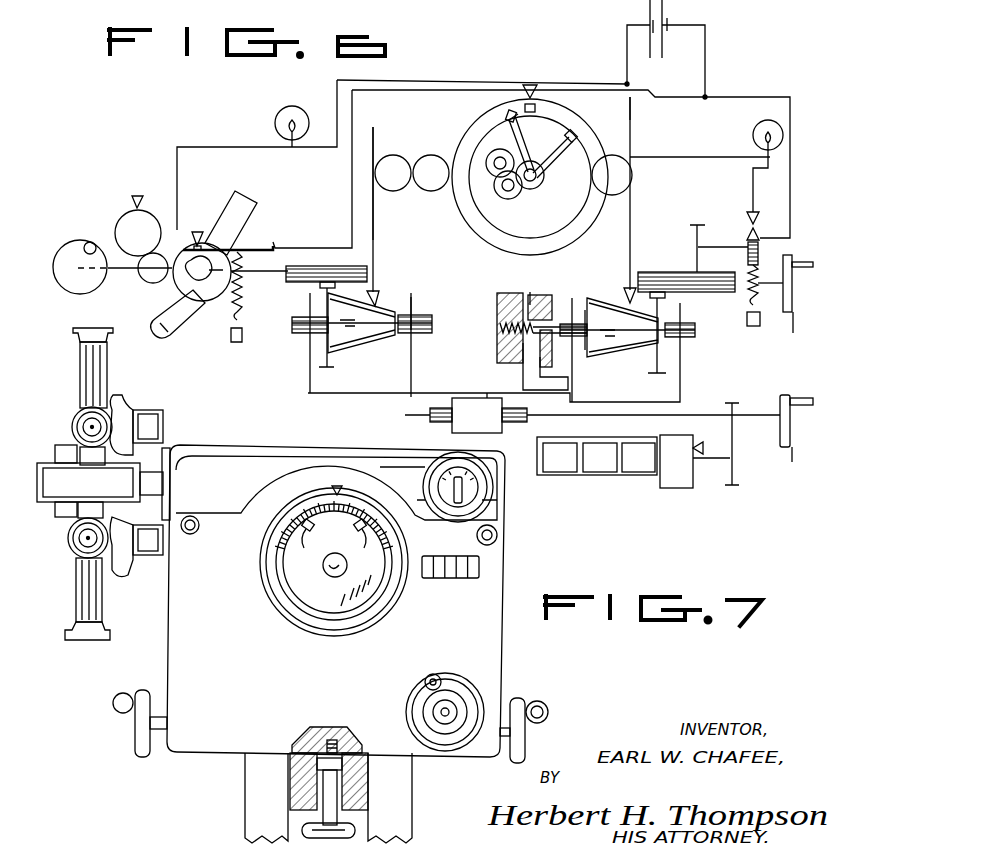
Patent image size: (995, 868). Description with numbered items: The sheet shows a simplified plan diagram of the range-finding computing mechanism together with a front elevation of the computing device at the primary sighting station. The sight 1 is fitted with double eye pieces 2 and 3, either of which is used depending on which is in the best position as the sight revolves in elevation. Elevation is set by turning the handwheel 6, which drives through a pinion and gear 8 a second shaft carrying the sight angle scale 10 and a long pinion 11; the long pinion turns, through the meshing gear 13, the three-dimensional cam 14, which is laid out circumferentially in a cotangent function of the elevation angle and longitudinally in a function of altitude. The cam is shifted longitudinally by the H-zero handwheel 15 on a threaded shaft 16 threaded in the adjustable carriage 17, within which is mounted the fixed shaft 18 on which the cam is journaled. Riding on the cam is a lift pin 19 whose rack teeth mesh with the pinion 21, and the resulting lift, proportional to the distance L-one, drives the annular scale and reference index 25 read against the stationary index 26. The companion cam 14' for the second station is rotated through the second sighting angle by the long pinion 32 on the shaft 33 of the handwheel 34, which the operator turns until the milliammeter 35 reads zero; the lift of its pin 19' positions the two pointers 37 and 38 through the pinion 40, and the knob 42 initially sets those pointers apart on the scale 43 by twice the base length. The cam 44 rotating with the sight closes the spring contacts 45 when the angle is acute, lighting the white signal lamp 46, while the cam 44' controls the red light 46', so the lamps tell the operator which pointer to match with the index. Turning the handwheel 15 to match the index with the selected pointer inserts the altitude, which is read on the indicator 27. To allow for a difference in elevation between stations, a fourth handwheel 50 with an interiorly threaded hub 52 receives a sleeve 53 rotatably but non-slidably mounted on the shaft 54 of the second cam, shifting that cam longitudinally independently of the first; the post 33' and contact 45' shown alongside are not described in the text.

In FIG. 6, the sight 1 is at (183, 313).
In FIG. 7, the eye piece 2 is at (80, 350).
In FIG. 7, the eye piece 3 is at (78, 603).
In FIG. 6, the handwheel 6 is at (78, 252).
In FIG. 7, the handwheel 6 is at (142, 692).
In FIG. 6, the gear 8 is at (148, 282).
In FIG. 6, the sight angle scale 10 is at (127, 215).
In FIG. 6, the long pinion 11 is at (290, 284).
In FIG. 6, the meshing gear 13 is at (327, 352).
In FIG. 6, the three-dimensional cam 14 is at (377, 312).
In FIG. 6, the cam for station S 14' is at (627, 344).
In FIG. 6, the H-zero handwheel 15 is at (781, 396).
In FIG. 7, the H-zero handwheel 15 is at (455, 680).
In FIG. 6, the threaded shaft 16 is at (432, 410).
In FIG. 6, the adjustable carriage 17 is at (453, 422).
In FIG. 6, the fixed shaft 18 is at (422, 322).
In FIG. 6, the lift pin 19 is at (396, 183).
In FIG. 6, the lift pin 19' is at (654, 148).
In FIG. 6, the pinion 21 is at (393, 158).
In FIG. 6, the annular scale and reference index 25 is at (535, 105).
In FIG. 7, the annular scale and reference index 25 is at (330, 505).
In FIG. 6, the stationary index 26 is at (532, 84).
In FIG. 7, the stationary index 26 is at (337, 485).
In FIG. 6, the indicator 27 is at (614, 476).
In FIG. 7, the indicator 27 is at (474, 557).
In FIG. 6, the long pinion 32 is at (657, 274).
In FIG. 6, the shaft 33 is at (783, 281).
In FIG. 6, the shaft 33' is at (687, 335).
In FIG. 6, the handwheel 34 is at (782, 305).
In FIG. 7, the handwheel 34 is at (545, 702).
In FIG. 7, the milliammeter 35 is at (470, 492).
In FIG. 6, the pointer 37 is at (510, 128).
In FIG. 7, the pointer 37 is at (300, 520).
In FIG. 6, the pointer 38 is at (587, 135).
In FIG. 7, the pointer 38 is at (368, 520).
In FIG. 6, the pinion 40 is at (610, 192).
In FIG. 7, the knob 42 is at (330, 577).
In FIG. 7, the scale 43 is at (312, 530).
In FIG. 6, the cam 44 is at (239, 223).
In FIG. 6, the cam 44' is at (785, 234).
In FIG. 6, the spring contacts 45 is at (201, 220).
In FIG. 6, the contact 45' is at (734, 206).
In FIG. 6, the white signal lamp 46 is at (258, 114).
In FIG. 7, the white signal lamp 46 is at (200, 506).
In FIG. 6, the red light 46' is at (759, 139).
In FIG. 7, the red light 46' is at (525, 532).
In FIG. 6, the fourth handwheel 50 is at (497, 318).
In FIG. 6, the interiorly threaded hub 52 is at (523, 365).
In FIG. 6, the sleeve 53 is at (534, 304).
In FIG. 6, the shaft 54 is at (583, 318).